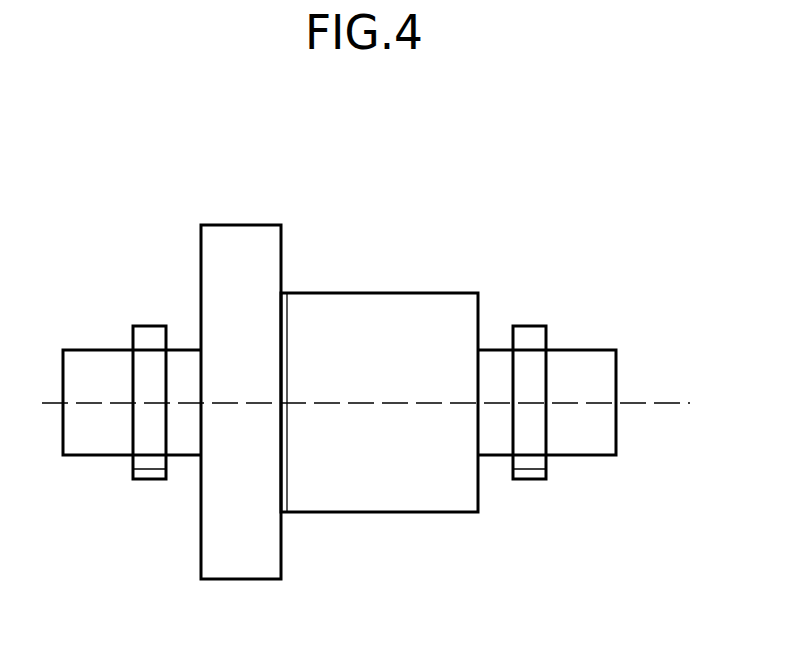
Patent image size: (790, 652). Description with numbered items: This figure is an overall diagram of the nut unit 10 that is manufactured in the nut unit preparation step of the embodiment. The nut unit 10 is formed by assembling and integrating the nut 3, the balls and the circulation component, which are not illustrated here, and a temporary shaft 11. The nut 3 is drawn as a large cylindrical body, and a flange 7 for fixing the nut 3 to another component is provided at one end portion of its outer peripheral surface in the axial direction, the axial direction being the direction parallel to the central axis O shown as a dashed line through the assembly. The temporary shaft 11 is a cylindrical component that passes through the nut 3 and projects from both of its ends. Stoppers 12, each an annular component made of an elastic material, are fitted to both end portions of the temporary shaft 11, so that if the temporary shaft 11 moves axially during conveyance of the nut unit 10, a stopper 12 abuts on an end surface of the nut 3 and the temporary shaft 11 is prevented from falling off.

The nut 3 is at (384, 268).
The flange 7 is at (241, 225).
The nut unit 10 is at (495, 230).
The temporary shaft 11 is at (588, 350).
The stopper 12 is at (148, 326).
The central axis O is at (673, 403).